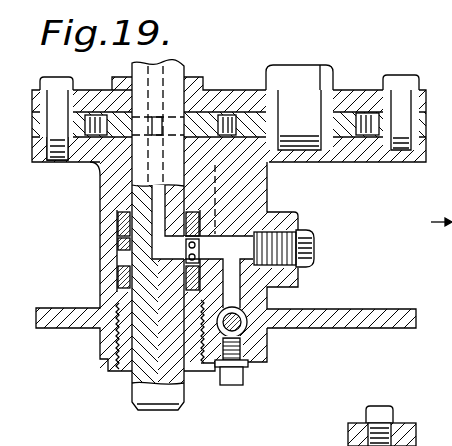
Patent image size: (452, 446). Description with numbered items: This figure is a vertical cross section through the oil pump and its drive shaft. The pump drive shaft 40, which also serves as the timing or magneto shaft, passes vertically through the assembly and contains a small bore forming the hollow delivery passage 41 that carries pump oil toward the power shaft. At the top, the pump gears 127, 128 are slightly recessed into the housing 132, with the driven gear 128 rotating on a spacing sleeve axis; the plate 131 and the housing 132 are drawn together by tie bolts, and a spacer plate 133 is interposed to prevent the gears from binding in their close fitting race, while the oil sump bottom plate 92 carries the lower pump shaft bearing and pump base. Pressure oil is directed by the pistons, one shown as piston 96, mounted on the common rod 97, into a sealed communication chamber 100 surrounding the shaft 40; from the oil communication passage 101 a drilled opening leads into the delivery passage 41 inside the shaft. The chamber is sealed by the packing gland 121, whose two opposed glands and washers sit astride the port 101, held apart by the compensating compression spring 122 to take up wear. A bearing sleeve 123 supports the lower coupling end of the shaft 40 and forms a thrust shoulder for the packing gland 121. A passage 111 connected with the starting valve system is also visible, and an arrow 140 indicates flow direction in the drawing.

The pump drive shaft 40 is at (170, 402).
The hollow delivery passage 41 is at (157, 197).
The oil sump bottom plate 92 is at (308, 316).
The piston 96 is at (247, 318).
The common rod 97 is at (238, 324).
The sealed communication chamber 100 is at (128, 253).
The oil communication passage 101 is at (173, 257).
The passage 111 is at (226, 282).
The packing gland 121 is at (128, 278).
The compensating compression spring 122 is at (127, 242).
The bearing sleeve 123 is at (125, 366).
The pump gear 127 is at (205, 115).
The driven gear 128 is at (339, 117).
The plate 131 is at (359, 95).
The housing 132 is at (338, 150).
The spacer plate 133 is at (426, 115).
The flow direction 140 is at (451, 245).